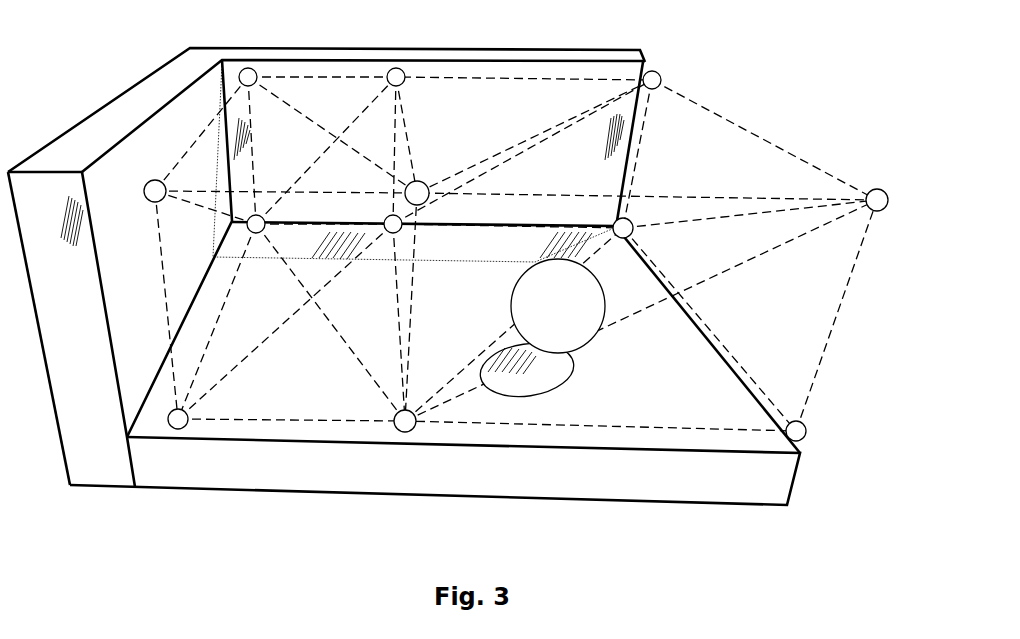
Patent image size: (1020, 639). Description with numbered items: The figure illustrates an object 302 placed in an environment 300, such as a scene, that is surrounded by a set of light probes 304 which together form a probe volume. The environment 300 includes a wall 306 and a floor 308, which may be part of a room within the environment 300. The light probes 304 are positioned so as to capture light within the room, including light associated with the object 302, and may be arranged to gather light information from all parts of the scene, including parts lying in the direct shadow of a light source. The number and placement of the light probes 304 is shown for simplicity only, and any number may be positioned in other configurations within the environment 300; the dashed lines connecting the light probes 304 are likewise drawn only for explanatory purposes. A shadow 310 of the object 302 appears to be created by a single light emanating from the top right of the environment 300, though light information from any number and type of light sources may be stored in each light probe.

The environment 300 is at (419, 259).
The object 302 is at (604, 297).
The light probes 304 is at (402, 84).
The wall 306 is at (645, 61).
The floor 308 is at (789, 485).
The shadow 310 is at (562, 388).